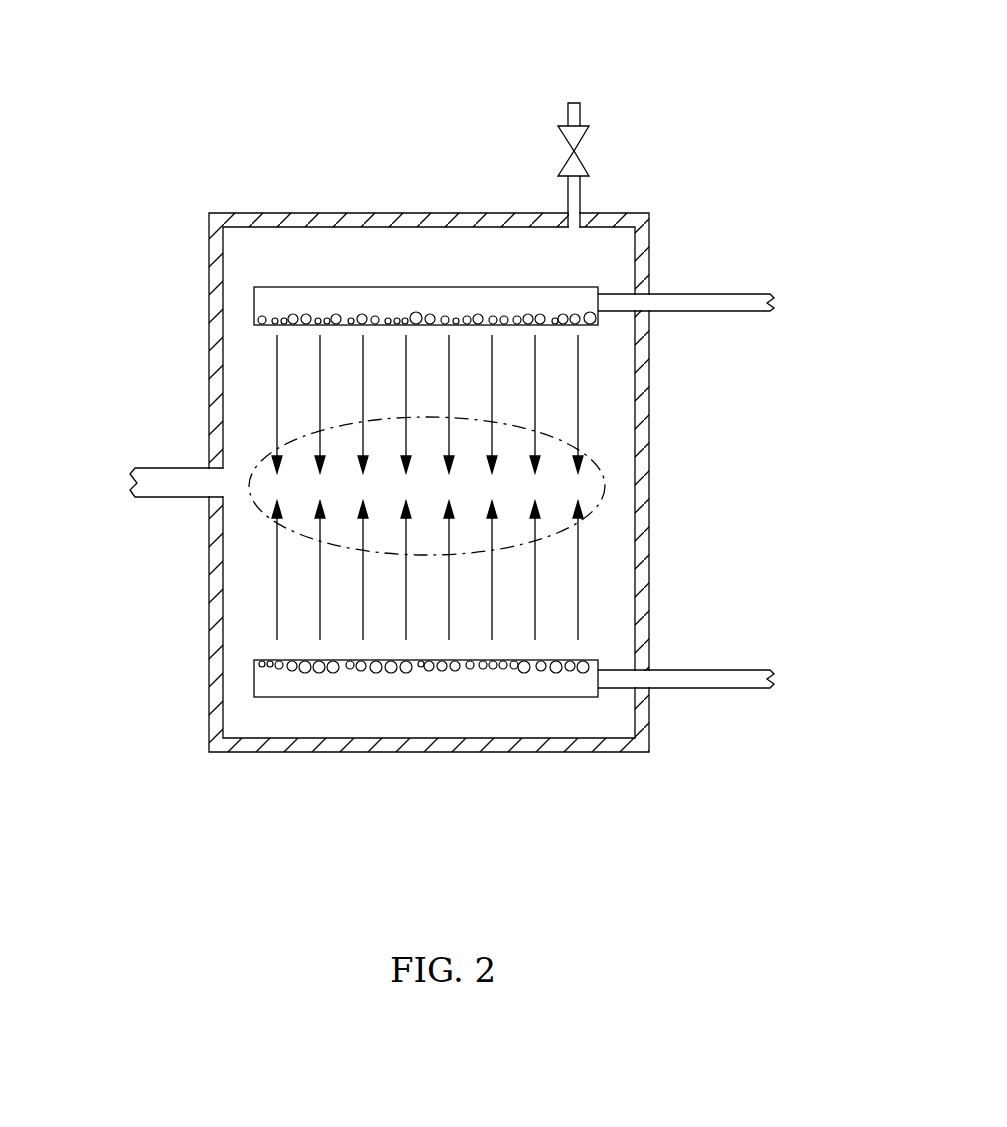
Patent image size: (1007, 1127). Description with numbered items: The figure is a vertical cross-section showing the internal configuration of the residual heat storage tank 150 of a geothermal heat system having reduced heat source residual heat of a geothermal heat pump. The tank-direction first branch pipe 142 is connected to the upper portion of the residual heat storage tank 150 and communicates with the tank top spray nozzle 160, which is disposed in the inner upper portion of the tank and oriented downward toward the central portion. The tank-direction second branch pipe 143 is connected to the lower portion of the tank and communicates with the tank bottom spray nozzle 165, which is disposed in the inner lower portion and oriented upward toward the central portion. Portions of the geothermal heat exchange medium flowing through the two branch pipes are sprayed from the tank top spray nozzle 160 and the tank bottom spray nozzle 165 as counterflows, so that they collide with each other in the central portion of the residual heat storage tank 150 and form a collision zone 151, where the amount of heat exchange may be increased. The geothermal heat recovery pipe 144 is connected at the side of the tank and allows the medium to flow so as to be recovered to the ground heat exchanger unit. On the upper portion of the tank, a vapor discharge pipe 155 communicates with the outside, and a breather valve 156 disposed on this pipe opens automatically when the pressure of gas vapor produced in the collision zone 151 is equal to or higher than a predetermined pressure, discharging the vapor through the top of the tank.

The residual heat storage tank 150 is at (321, 213).
The tank top spray nozzle 160 is at (404, 287).
The tank bottom spray nozzle 165 is at (405, 688).
The vapor discharge pipe 155 is at (573, 103).
The breather valve 156 is at (586, 166).
The tank-direction first branch pipe 142 is at (680, 300).
The tank-direction second branch pipe 143 is at (688, 676).
The geothermal heat recovery pipe 144 is at (178, 470).
The collision zone 151 is at (600, 465).